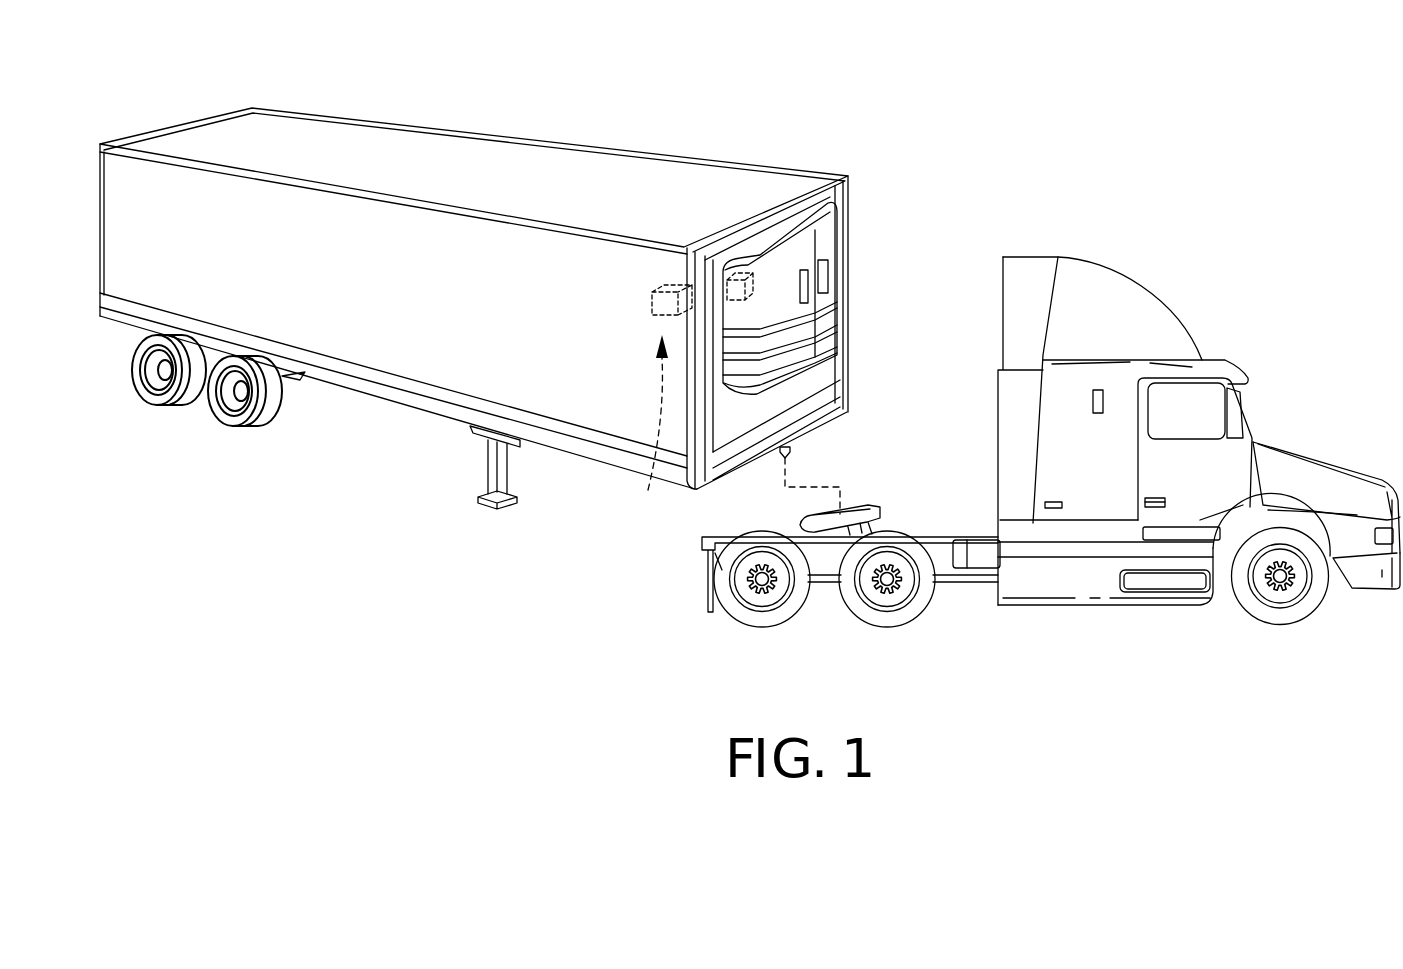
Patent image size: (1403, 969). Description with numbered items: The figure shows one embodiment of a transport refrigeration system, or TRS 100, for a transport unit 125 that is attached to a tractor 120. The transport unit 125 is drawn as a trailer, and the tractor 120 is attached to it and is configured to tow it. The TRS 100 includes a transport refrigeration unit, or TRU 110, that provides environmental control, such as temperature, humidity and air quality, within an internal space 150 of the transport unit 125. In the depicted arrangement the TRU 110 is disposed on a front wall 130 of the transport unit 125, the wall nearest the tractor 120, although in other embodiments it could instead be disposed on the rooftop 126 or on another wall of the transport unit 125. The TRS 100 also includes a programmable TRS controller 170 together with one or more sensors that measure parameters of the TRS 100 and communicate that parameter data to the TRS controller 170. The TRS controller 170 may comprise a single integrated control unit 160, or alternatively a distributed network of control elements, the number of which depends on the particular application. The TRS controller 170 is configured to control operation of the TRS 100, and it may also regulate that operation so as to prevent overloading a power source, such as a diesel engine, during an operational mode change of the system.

The transport refrigeration system (TRS) 100 is at (849, 88).
The transport refrigeration unit (TRU) 110 is at (832, 253).
The tractor 120 is at (1320, 451).
The transport unit (TU) 125 is at (558, 145).
The rooftop 126 is at (386, 134).
The front wall 130 is at (849, 180).
The internal space 150 is at (403, 303).
The integrated control unit 160 is at (749, 282).
The TRS controller 170 is at (650, 426).